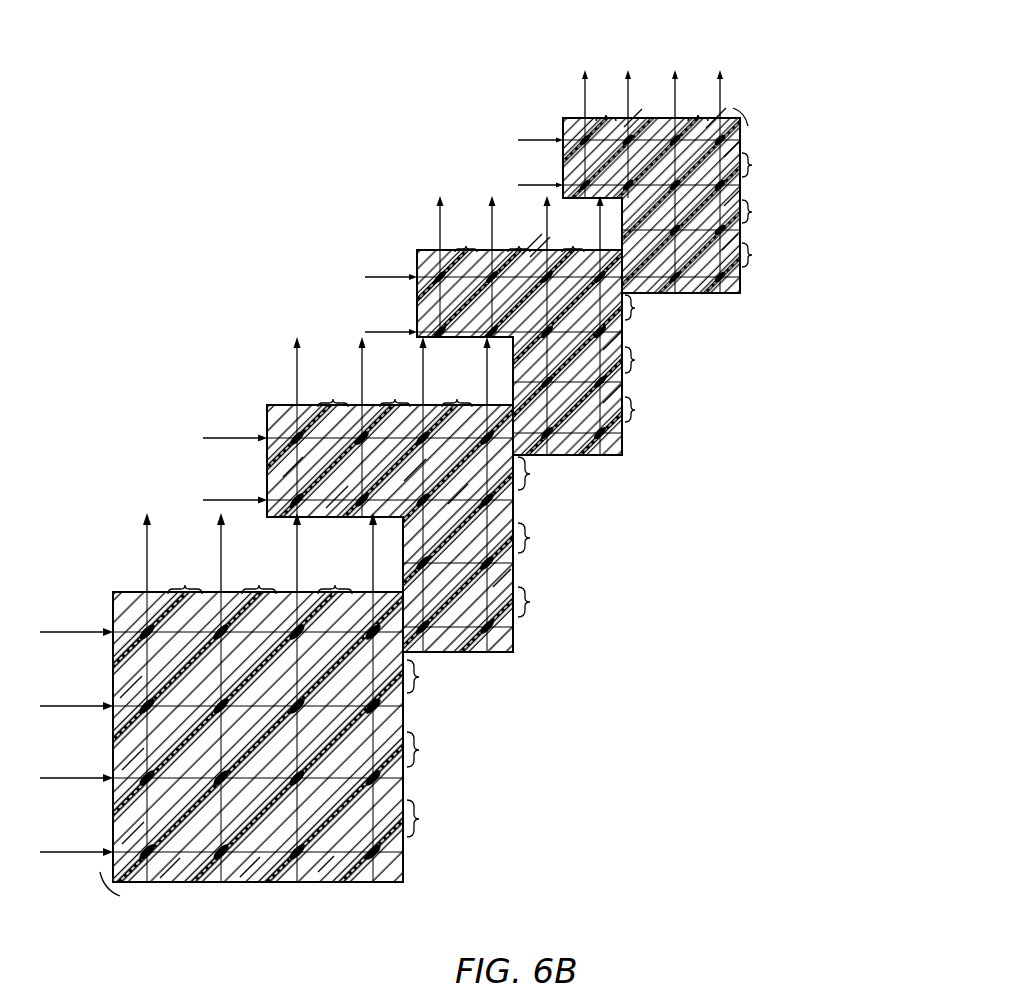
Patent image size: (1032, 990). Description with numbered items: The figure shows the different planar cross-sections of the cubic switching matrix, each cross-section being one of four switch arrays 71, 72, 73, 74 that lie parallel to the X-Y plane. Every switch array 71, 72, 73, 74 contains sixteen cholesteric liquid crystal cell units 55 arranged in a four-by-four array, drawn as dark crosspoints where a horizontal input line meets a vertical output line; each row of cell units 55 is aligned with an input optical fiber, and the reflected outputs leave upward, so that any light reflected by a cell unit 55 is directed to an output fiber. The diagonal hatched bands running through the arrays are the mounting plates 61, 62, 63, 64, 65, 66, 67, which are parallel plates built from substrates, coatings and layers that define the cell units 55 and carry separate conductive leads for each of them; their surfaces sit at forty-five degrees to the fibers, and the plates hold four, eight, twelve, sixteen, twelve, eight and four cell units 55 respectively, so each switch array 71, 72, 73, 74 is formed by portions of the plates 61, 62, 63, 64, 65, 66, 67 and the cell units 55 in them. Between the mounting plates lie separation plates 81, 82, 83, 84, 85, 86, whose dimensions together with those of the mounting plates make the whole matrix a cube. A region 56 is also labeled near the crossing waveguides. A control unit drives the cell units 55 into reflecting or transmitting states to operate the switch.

The cholesteric liquid crystal cell unit 55 is at (435, 498).
The waveguide crossing region 56 is at (354, 894).
The mounting plate 61 is at (393, 344).
The mounting plate 62 is at (388, 409).
The mounting plate 63 is at (515, 344).
The mounting plate 64 is at (429, 507).
The mounting plate 65 is at (592, 423).
The mounting plate 66 is at (592, 483).
The mounting plate 67 is at (592, 540).
The switch array 71 is at (260, 702).
The switch array 72 is at (398, 498).
The switch array 73 is at (531, 330).
The switch array 74 is at (669, 189).
The separation plate 81 is at (369, 359).
The separation plate 82 is at (289, 460).
The separation plate 83 is at (412, 458).
The separation plate 84 is at (490, 531).
The separation plate 85 is at (534, 553).
The separation plate 86 is at (660, 403).